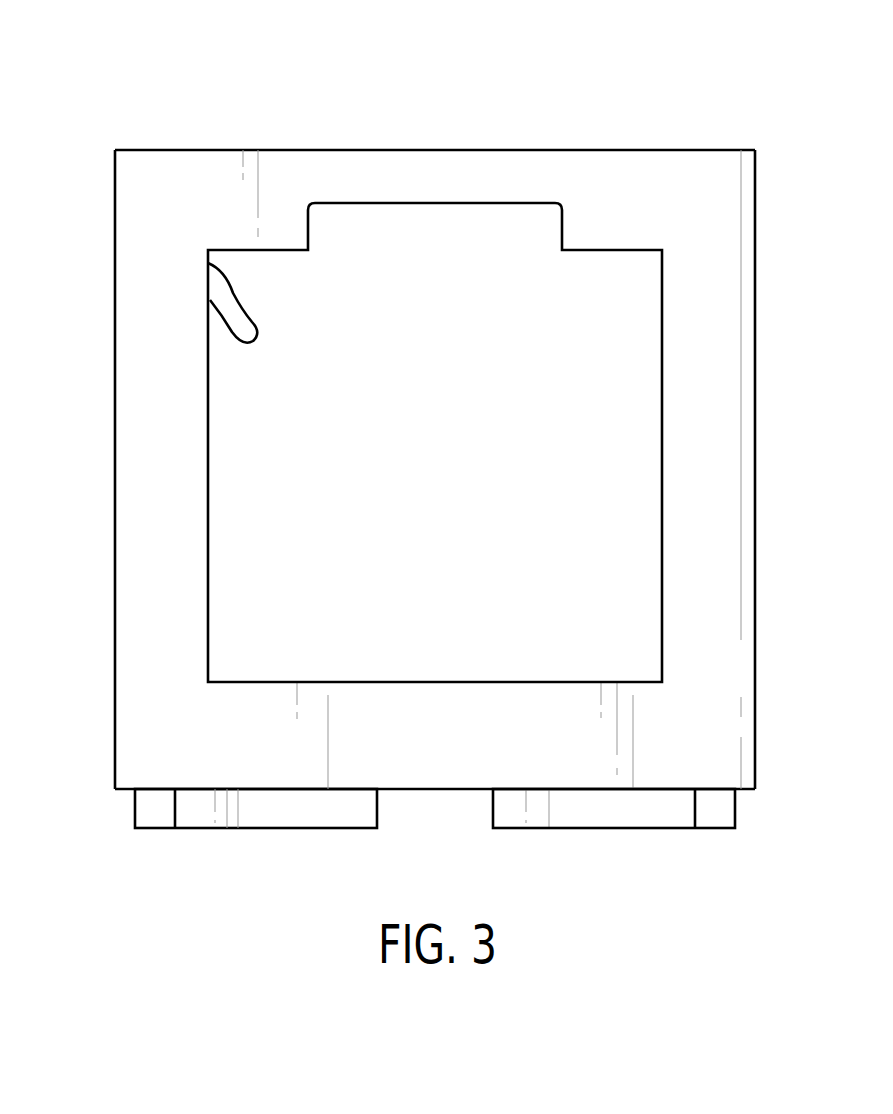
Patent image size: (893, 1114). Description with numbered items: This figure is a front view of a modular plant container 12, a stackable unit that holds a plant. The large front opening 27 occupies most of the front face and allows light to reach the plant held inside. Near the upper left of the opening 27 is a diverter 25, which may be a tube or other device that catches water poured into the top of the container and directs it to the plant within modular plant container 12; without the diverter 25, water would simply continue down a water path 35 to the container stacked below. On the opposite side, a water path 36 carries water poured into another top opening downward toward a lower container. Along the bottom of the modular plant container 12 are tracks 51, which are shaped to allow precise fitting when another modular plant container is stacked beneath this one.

The modular plant container 12 is at (661, 56).
The diverter 25 is at (250, 312).
The opening 27 is at (449, 467).
The water path 35 is at (120, 427).
The water path 36 is at (747, 427).
The tracks 51 is at (633, 829).